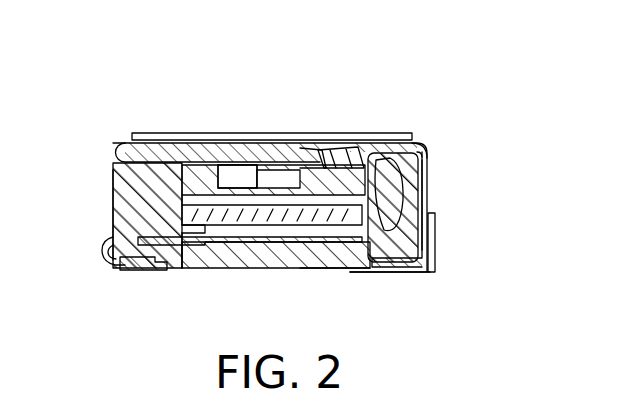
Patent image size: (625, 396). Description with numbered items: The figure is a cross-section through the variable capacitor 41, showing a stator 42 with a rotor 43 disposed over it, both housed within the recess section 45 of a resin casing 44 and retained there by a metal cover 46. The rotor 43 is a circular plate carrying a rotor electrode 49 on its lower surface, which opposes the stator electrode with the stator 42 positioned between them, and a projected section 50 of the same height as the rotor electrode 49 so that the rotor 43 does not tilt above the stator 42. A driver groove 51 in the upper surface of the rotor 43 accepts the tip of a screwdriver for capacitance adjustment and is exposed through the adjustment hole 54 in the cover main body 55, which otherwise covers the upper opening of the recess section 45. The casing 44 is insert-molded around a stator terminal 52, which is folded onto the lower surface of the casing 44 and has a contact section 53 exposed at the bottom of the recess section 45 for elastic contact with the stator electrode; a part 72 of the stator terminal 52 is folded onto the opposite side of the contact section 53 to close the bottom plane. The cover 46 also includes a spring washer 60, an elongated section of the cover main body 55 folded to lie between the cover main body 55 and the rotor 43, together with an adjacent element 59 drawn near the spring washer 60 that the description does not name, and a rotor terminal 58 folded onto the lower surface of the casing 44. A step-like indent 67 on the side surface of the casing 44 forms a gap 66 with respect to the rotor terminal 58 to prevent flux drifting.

The variable capacitor 41 is at (104, 97).
The stator 42 is at (117, 210).
The rotor 43 is at (428, 178).
The casing 44 is at (336, 274).
The recess section 45 is at (432, 236).
The cover 46 is at (399, 132).
The rotor electrode 49 is at (140, 192).
The projected section 50 is at (350, 255).
The driver groove 51 is at (265, 178).
The stator terminal 52 is at (110, 265).
The contact section 53 is at (222, 260).
The adjustment hole 54 is at (226, 135).
The cover main body 55 is at (157, 134).
The rotor terminal 58 is at (420, 270).
The groove 59 is at (328, 147).
The spring washer 60 is at (355, 148).
The gap 66 is at (424, 147).
The step-like indent 67 is at (427, 195).
The part of the stator terminal 72 is at (253, 260).